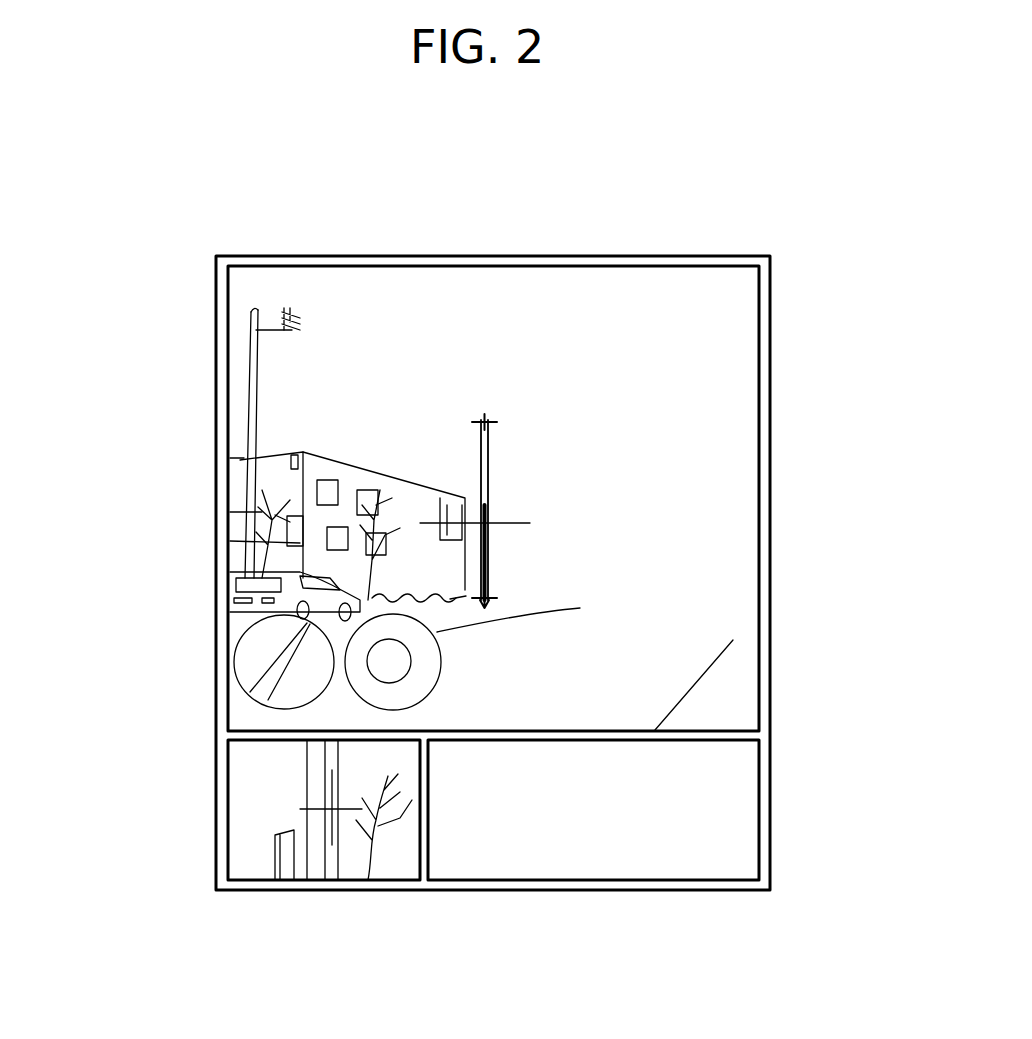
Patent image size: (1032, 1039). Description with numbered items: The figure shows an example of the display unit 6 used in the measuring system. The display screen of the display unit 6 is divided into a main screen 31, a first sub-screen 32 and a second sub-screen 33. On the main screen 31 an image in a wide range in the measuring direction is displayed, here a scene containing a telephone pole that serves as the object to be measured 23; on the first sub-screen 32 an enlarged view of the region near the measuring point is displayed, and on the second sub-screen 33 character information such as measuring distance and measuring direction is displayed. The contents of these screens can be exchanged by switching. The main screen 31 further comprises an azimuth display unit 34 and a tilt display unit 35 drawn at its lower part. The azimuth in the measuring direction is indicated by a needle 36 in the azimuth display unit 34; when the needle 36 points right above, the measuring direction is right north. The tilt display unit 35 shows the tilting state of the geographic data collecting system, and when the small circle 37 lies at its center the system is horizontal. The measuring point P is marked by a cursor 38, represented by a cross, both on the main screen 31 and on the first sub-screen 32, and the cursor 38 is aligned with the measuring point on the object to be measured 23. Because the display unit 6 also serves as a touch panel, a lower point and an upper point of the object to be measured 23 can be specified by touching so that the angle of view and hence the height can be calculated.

The display unit 6 is at (588, 257).
The main screen 31 is at (640, 300).
The first sub-screen 32 is at (282, 757).
The second sub-screen 33 is at (708, 803).
The azimuth display unit 34 is at (277, 710).
The tilt display unit 35 is at (438, 680).
The needle 36 is at (272, 652).
The small circle 37 is at (412, 657).
The cursor 38 is at (530, 523).
The object to be measured 23 is at (478, 462).